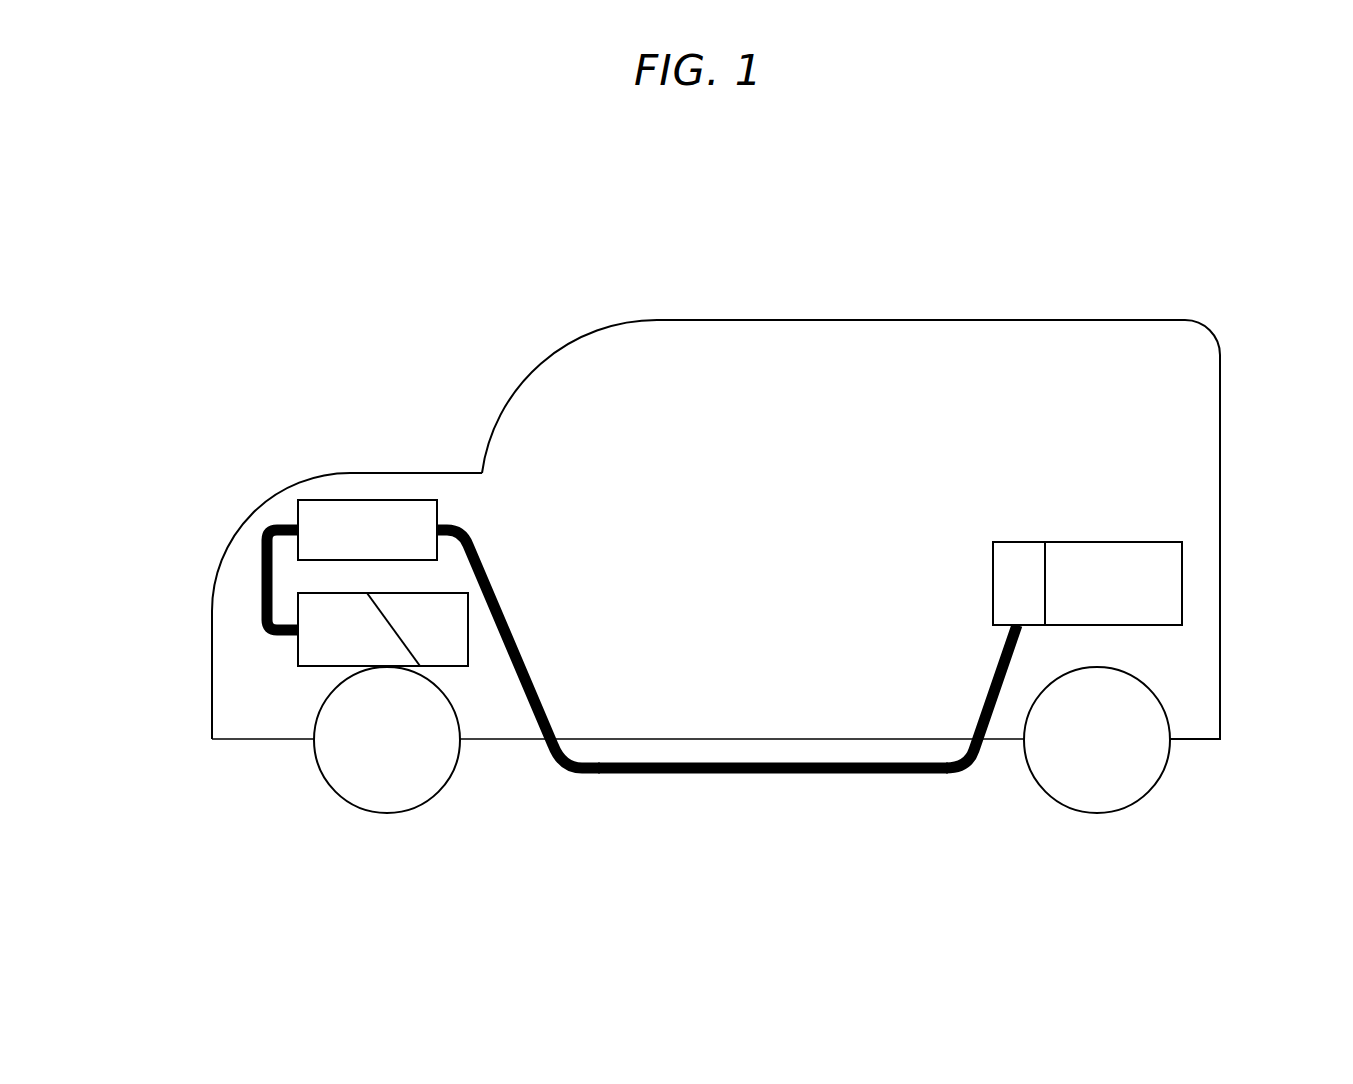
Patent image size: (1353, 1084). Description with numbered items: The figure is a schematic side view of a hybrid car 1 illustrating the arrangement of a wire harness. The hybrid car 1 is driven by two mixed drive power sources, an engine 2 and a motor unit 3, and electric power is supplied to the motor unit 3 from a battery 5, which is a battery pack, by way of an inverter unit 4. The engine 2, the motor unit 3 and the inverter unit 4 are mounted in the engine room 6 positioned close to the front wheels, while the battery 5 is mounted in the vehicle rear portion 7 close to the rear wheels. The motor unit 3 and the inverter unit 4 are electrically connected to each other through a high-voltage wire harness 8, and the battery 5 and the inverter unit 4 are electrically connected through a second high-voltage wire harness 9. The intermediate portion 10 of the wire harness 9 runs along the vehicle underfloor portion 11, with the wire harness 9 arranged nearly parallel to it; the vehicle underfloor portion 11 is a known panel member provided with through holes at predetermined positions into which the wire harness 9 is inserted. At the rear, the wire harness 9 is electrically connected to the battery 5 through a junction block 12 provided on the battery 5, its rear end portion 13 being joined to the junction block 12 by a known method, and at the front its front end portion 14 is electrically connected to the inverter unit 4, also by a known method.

The hybrid car 1 is at (707, 580).
The engine 2 is at (446, 639).
The motor unit 3 is at (317, 643).
The inverter unit 4 is at (333, 517).
The battery 5 is at (1120, 558).
The engine room 6 is at (238, 700).
The vehicle rear portion 7 is at (1189, 660).
The high-voltage wire harness 8 is at (258, 565).
The high-voltage wire harness 9 is at (641, 775).
The intermediate portion 10 is at (785, 773).
The vehicle underfloor portion 11 is at (900, 742).
The junction block 12 is at (1008, 556).
The rear end portion 13 is at (1000, 650).
The front end portion 14 is at (477, 528).